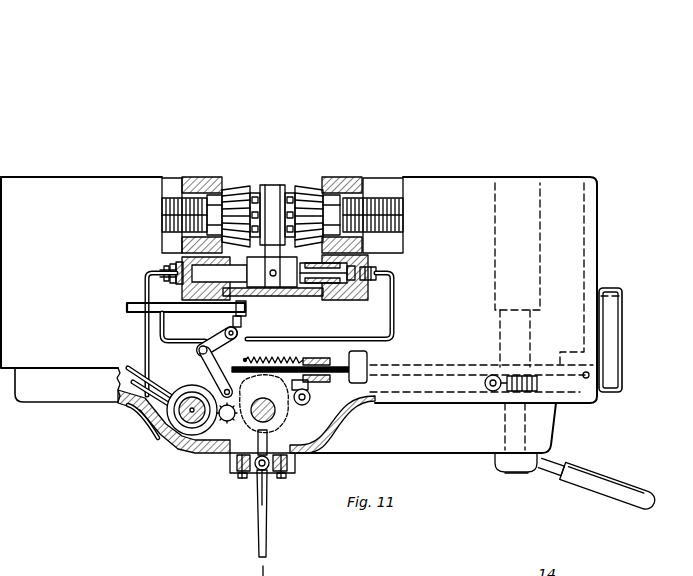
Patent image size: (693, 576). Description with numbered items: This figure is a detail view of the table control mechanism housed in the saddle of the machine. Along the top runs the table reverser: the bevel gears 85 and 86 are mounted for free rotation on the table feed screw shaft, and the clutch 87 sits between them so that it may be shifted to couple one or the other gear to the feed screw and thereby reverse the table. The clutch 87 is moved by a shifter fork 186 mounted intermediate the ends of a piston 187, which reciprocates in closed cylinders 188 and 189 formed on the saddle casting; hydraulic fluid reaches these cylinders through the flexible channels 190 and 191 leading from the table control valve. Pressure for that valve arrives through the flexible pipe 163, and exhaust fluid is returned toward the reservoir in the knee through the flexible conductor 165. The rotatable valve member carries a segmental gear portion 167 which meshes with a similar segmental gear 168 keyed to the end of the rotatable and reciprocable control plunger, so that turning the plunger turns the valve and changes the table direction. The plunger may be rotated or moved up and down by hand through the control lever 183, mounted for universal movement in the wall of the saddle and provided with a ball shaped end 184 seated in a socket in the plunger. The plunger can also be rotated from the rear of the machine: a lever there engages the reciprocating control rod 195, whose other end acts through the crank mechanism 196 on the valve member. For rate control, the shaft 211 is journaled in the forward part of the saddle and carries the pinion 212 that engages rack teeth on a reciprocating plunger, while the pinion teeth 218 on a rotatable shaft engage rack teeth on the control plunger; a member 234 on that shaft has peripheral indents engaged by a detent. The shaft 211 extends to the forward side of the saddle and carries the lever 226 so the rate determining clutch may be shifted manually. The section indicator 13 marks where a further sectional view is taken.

The section line 13 is at (258, 572).
The bevel gear 85 is at (163, 232).
The bevel gear 86 is at (370, 224).
The clutch 87 is at (273, 205).
The flexible pipe 163 is at (137, 367).
The flexible conductor 165 is at (136, 408).
The segmental gear portion 167 is at (212, 455).
The segmental gear 168 is at (225, 428).
The control lever 183 is at (258, 492).
The ball shaped end 184 is at (327, 432).
The shifter fork 186 is at (262, 282).
The piston 187 is at (338, 297).
The closed cylinder 188 is at (178, 262).
The closed cylinder 189 is at (378, 268).
The flexible channel 190 is at (146, 279).
The flexible channel 191 is at (394, 293).
The reciprocating control rod 195 is at (167, 299).
The crank mechanism 196 is at (205, 362).
The shaft 211 is at (520, 438).
The pinion 212 is at (538, 386).
The pinion teeth 218 is at (286, 362).
The lever 226 is at (612, 485).
The member 234 is at (349, 360).